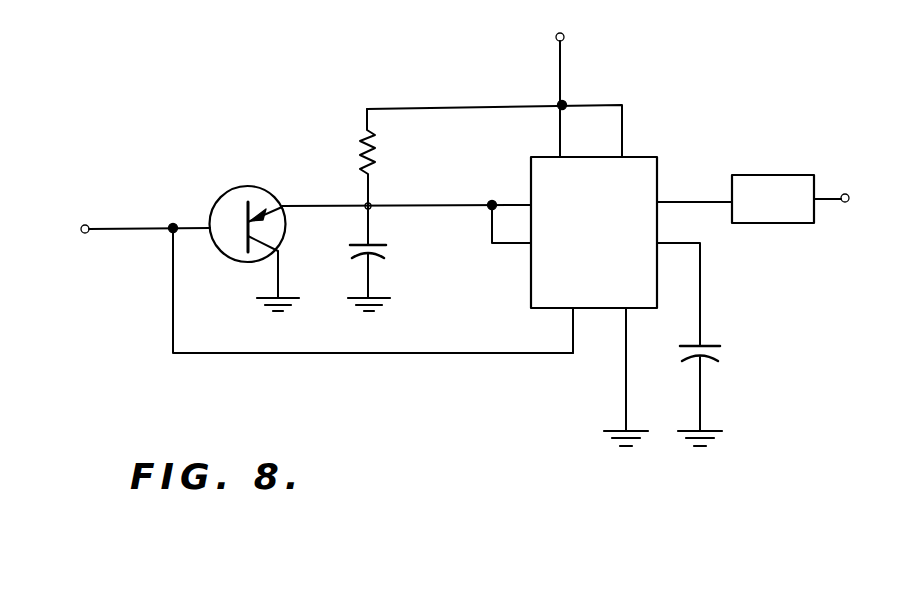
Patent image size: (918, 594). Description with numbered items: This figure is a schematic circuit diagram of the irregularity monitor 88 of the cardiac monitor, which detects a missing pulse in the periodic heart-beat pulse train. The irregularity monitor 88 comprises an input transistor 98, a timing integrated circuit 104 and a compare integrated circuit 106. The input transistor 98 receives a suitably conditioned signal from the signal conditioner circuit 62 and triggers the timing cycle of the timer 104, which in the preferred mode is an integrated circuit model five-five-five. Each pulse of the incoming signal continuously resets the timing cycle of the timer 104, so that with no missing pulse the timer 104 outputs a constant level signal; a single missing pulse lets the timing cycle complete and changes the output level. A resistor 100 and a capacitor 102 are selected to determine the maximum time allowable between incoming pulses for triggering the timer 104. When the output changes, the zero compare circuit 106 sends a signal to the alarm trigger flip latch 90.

The irregularity monitor 88 is at (300, 148).
The signal conditioner circuit 62 is at (131, 230).
The input transistor 98 is at (284, 240).
The resistor 100 is at (362, 150).
The capacitor 102 is at (380, 244).
The timing integrated circuit 104 is at (608, 309).
The compare integrated circuit 106 is at (767, 223).
The alarm trigger flip latch 90 is at (857, 147).